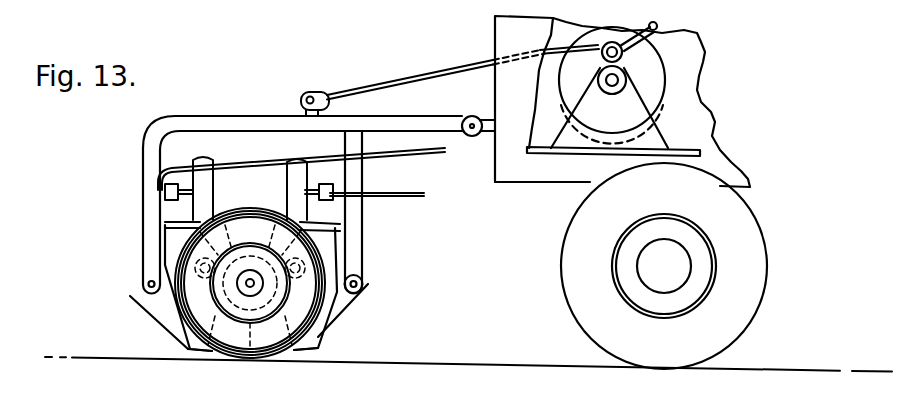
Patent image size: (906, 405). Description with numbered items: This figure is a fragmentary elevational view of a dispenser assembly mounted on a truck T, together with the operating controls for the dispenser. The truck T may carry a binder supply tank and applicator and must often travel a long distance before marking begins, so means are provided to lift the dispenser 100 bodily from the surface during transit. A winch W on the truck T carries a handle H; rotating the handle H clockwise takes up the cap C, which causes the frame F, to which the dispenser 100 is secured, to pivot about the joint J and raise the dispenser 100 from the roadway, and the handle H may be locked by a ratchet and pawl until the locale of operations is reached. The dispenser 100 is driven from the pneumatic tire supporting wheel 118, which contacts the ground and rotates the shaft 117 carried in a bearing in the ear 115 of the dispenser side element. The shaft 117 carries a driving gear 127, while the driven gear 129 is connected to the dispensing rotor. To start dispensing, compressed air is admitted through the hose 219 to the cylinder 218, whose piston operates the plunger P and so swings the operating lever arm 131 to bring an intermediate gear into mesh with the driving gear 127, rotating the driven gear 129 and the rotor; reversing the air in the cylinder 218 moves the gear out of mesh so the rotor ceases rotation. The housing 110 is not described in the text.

The frame F is at (263, 117).
The cap C is at (416, 78).
The plunger P is at (312, 192).
The joint J is at (471, 115).
The handle H is at (655, 31).
The winch W is at (647, 75).
The truck T is at (563, 173).
The dispenser 100 is at (577, 266).
The housing 110 is at (356, 279).
The ear 115 is at (366, 290).
The shaft 117 is at (207, 372).
The supporting wheel 118 is at (288, 329).
The driving gear 127 is at (284, 373).
The driven gear 129 is at (312, 318).
The operating lever arm 131 is at (185, 222).
The cylinder 218 is at (206, 199).
The hose 219 is at (410, 196).